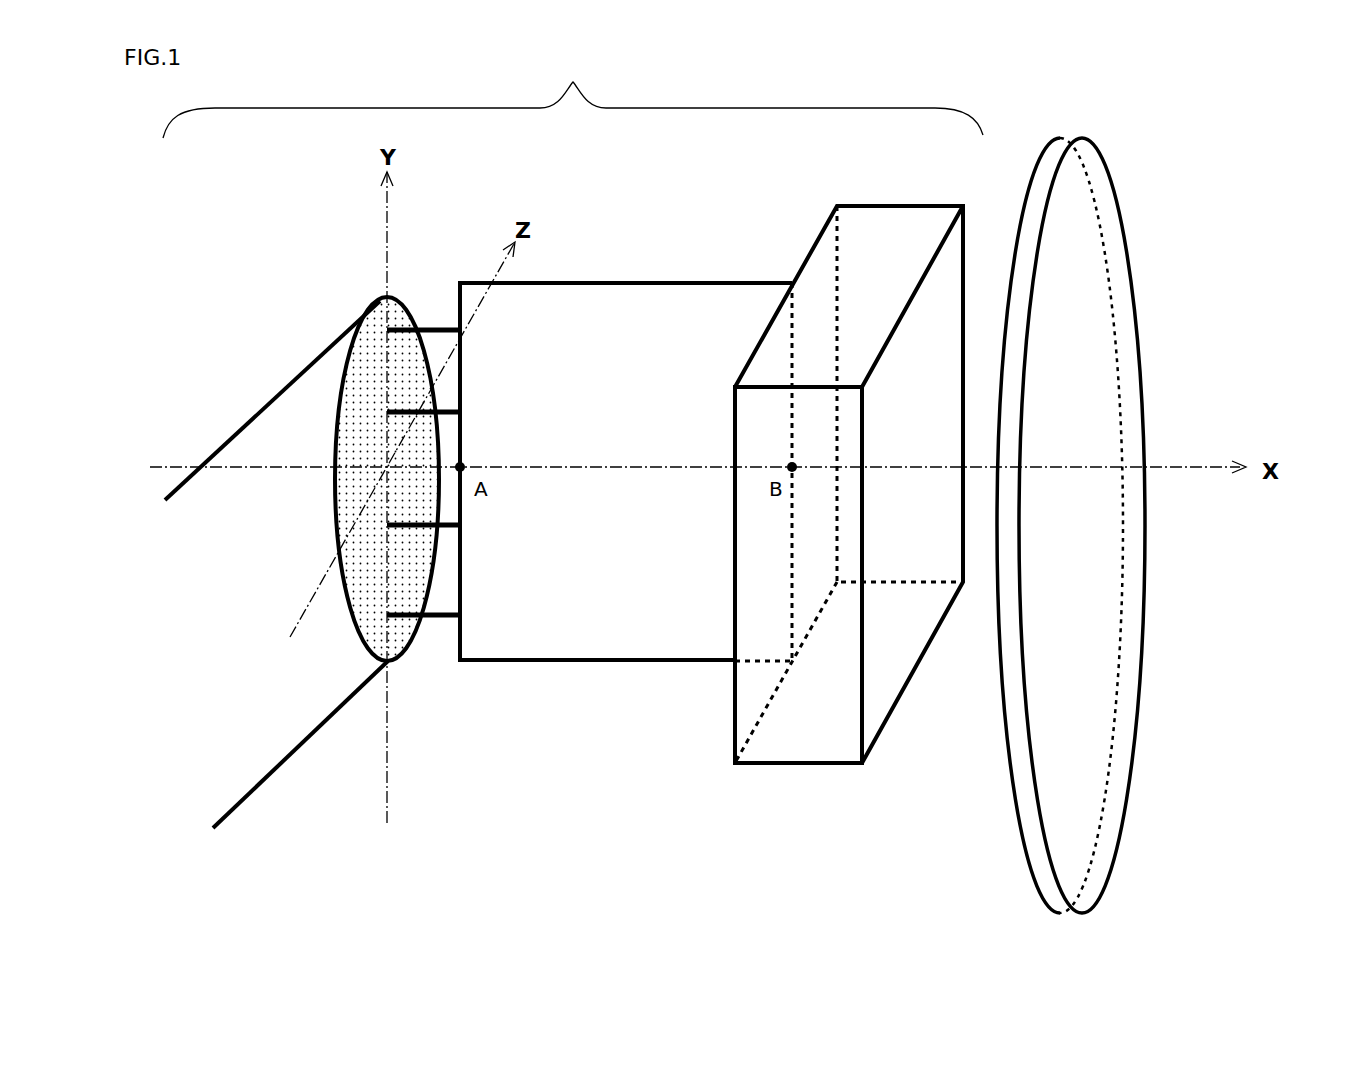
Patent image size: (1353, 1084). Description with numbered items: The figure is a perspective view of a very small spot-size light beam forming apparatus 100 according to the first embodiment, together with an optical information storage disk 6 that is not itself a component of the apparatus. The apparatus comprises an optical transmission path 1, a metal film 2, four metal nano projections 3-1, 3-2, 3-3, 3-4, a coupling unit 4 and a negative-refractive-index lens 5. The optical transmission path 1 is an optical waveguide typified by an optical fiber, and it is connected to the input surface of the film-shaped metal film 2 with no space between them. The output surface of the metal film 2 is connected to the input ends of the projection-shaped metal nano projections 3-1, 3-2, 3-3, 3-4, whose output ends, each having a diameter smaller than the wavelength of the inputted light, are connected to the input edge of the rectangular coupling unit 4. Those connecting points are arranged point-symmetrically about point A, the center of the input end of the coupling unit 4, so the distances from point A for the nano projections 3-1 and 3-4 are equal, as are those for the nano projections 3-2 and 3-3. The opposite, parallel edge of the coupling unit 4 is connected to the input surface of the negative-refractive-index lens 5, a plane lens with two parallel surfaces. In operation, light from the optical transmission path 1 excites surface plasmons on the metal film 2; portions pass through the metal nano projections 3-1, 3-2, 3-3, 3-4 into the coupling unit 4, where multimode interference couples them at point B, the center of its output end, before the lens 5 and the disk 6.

The very small spot-size light beam forming apparatus 100 is at (573, 96).
The optical transmission path 1 is at (267, 410).
The metal film 2 is at (380, 307).
The metal nano projection 3-1 is at (428, 328).
The metal nano projection 3-2 is at (452, 410).
The metal nano projection 3-3 is at (452, 530).
The metal nano projection 3-4 is at (430, 620).
The coupling unit 4 is at (656, 283).
The negative-refractive-index lens 5 is at (826, 240).
The optical information storage disk 6 is at (1115, 188).